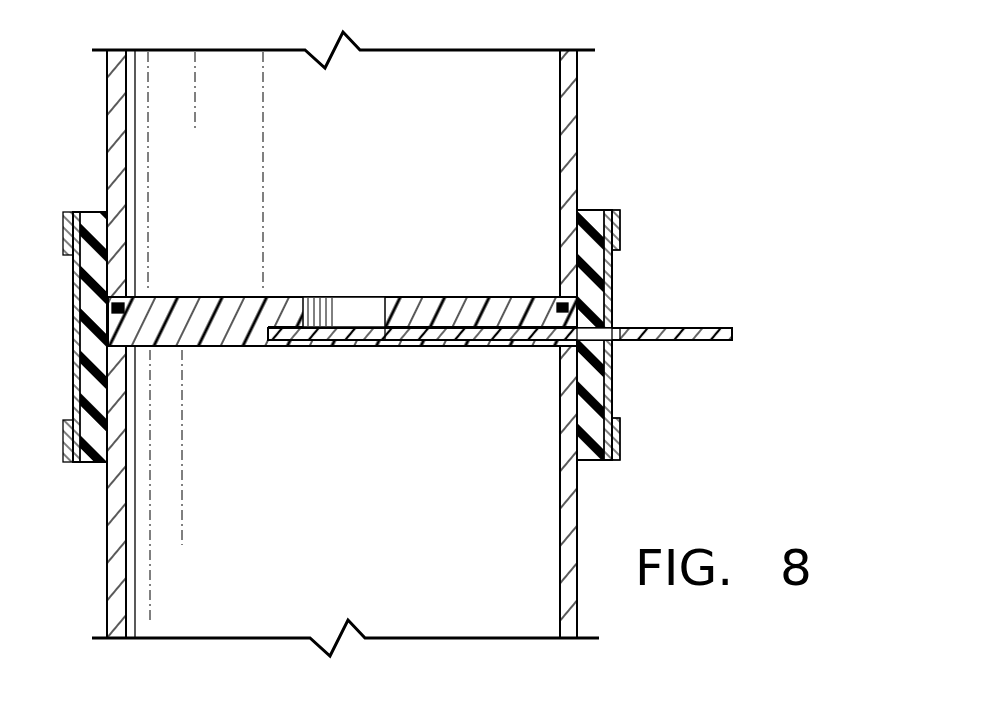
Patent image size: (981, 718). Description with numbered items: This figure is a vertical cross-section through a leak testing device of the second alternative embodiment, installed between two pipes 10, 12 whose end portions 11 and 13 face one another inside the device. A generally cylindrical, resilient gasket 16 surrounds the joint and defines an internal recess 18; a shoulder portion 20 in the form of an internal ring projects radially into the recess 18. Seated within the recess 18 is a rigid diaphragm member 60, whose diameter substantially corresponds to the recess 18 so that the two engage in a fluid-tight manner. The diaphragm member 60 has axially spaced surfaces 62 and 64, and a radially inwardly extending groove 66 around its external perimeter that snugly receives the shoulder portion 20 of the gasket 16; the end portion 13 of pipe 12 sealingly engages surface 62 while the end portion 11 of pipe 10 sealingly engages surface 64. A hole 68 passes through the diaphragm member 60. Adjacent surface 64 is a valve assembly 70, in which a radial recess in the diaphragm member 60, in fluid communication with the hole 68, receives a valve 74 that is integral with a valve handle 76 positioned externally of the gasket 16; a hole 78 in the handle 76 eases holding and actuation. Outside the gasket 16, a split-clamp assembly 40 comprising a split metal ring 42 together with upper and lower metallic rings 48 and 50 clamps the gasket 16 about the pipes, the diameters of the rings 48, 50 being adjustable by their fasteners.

The pipe 10 is at (580, 610).
The end portion of pipe 11 is at (547, 427).
The pipe 12 is at (578, 100).
The end portion of pipe 13 is at (143, 200).
The gasket 16 is at (590, 212).
The recess 18 is at (115, 212).
The shoulder portion 20 is at (120, 312).
The split-clamp assembly 40 is at (752, 268).
The metal ring 42 is at (612, 303).
The upper metallic ring 48 is at (622, 232).
The lower metallic ring 50 is at (622, 445).
The diaphragm member 60 is at (196, 296).
The diaphragm surface 62 is at (270, 296).
The diaphragm surface 64 is at (218, 350).
The groove 66 is at (556, 302).
The hole 68 is at (365, 296).
The valve assembly 70 is at (335, 348).
The valve 74 is at (360, 348).
The valve handle 76 is at (712, 326).
The hole 78 is at (673, 341).